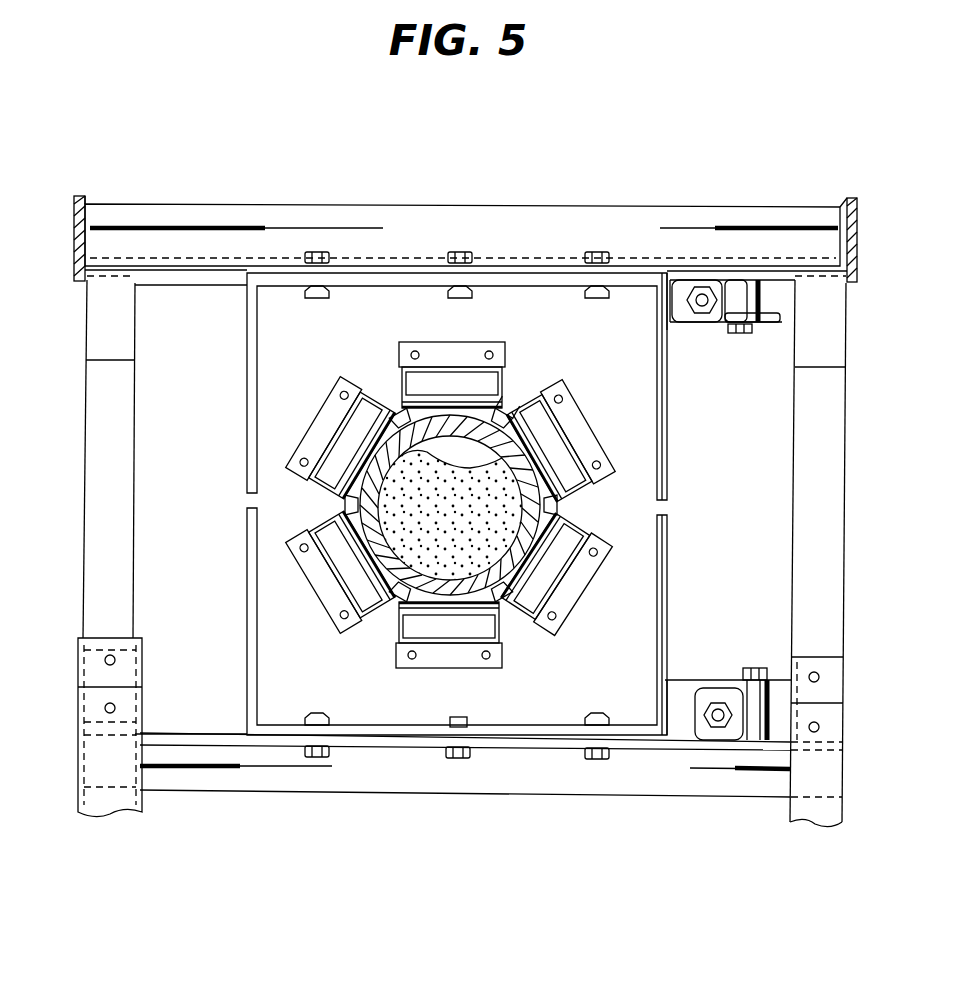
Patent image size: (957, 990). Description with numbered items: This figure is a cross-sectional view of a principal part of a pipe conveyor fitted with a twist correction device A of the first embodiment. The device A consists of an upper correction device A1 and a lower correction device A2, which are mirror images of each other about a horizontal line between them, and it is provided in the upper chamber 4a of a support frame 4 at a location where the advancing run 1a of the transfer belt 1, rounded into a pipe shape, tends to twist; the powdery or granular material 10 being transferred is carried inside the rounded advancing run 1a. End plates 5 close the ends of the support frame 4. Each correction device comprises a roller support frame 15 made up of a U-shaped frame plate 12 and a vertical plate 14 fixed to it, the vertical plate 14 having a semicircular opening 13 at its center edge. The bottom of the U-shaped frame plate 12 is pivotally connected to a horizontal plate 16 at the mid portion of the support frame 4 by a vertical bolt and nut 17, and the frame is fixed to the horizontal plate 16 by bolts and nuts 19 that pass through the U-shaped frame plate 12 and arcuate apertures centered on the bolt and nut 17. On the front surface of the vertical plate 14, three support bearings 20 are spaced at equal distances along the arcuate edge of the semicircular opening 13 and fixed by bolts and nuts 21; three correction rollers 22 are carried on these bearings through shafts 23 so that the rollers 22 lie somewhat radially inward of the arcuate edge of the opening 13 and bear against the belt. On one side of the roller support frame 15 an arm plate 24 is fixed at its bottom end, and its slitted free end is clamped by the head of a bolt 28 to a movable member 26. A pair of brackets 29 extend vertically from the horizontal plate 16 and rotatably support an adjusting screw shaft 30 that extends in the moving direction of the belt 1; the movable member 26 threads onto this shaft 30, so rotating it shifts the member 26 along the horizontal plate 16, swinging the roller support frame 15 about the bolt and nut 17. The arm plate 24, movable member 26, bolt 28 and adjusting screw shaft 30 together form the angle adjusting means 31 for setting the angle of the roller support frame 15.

The transfer belt 1 is at (465, 894).
The advancing run 1a is at (450, 666).
The support frame 4 is at (215, 203).
The upper chamber 4a is at (167, 297).
The end plate 5 is at (96, 196).
The powdery or granular material 10 is at (437, 578).
The U-shaped frame plate 12 is at (245, 403).
The semicircular opening 13 is at (538, 360).
The vertical plate 14 is at (668, 424).
The roller support frame 15 is at (668, 484).
The horizontal plate 16 is at (203, 283).
The vertical bolt and nut 17 is at (462, 254).
The bolts and nuts 19 is at (315, 254).
The support bearings 20 is at (330, 412).
The bolts and nuts 21 is at (340, 380).
The correction rollers 22 is at (433, 365).
The shafts 23 is at (395, 386).
The arm plate 24 is at (768, 333).
The movable member 26 is at (768, 265).
The bolt 28 is at (736, 334).
The brackets 29 is at (664, 262).
The adjusting screw shaft 30 is at (703, 325).
The angle adjusting means 31 is at (708, 236).
The twist correction device A is at (366, 220).
The upper correction device A1 is at (226, 347).
The lower correction device A2 is at (224, 564).